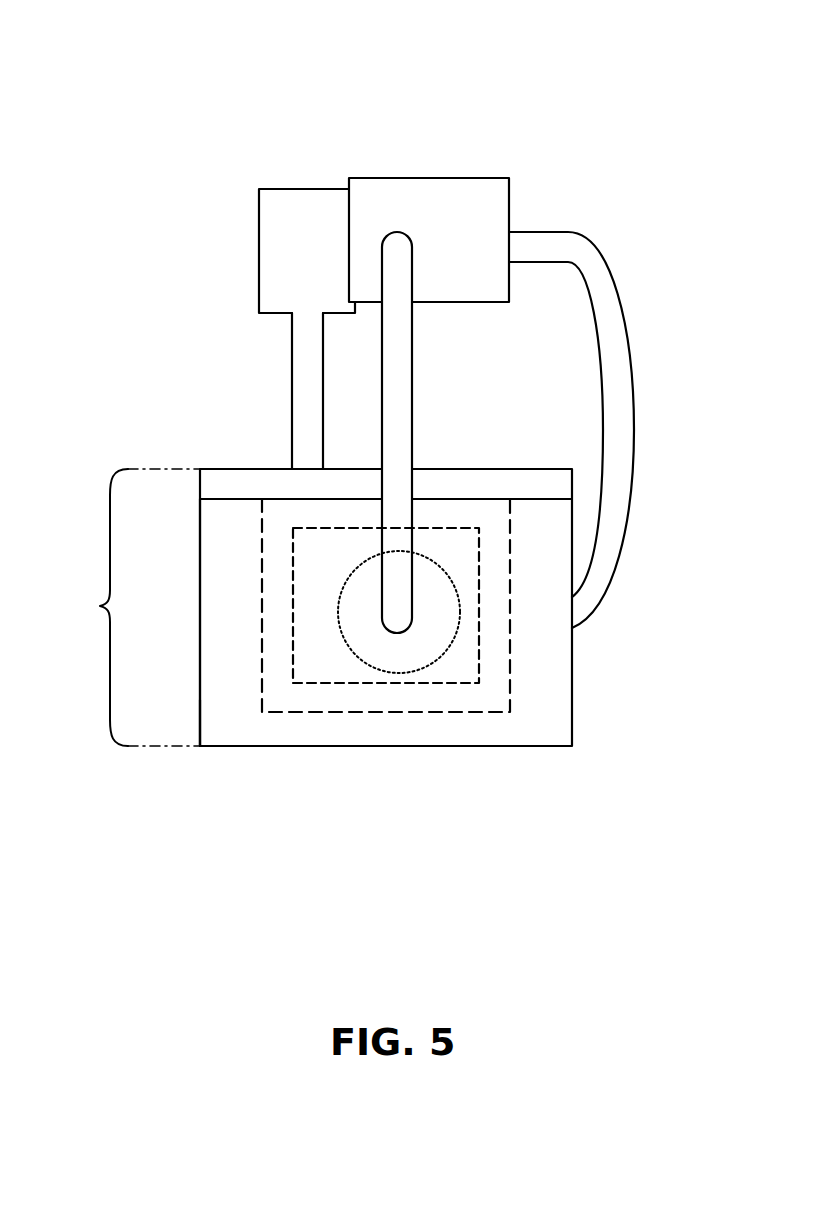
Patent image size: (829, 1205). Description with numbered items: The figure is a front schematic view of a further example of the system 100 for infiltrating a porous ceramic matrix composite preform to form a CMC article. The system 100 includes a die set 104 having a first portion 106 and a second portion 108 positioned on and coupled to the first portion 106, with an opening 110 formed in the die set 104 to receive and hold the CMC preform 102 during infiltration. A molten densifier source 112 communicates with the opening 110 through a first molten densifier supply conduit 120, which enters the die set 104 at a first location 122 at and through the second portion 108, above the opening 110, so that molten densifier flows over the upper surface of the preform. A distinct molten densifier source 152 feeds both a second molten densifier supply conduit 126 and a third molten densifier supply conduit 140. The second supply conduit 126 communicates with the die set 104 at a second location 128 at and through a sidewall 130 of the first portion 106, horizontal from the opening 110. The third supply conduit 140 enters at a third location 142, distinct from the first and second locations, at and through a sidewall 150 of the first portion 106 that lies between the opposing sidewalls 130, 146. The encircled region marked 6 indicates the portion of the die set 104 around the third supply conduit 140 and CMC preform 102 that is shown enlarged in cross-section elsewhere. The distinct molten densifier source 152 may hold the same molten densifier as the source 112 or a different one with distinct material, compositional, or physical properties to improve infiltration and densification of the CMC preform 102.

The system 100 is at (446, 102).
The CMC preform 102 is at (432, 684).
The die set 104 is at (120, 607).
The first portion 106 is at (199, 661).
The second portion 108 is at (199, 488).
The opening 110 is at (291, 714).
The molten densifier source 112 is at (258, 266).
The first molten densifier supply conduit 120 is at (291, 364).
The first location 122 is at (287, 463).
The second molten densifier supply conduit 126 is at (596, 336).
The second location 128 is at (575, 636).
The sidewall 130 is at (575, 731).
The third molten densifier supply conduit 140 is at (413, 394).
The third location 142 is at (420, 618).
The sidewall 146 is at (197, 701).
The sidewall 150 is at (227, 645).
The distinct molten densifier source 152 is at (400, 176).
The detail region (FIG. 6) 6 is at (447, 652).